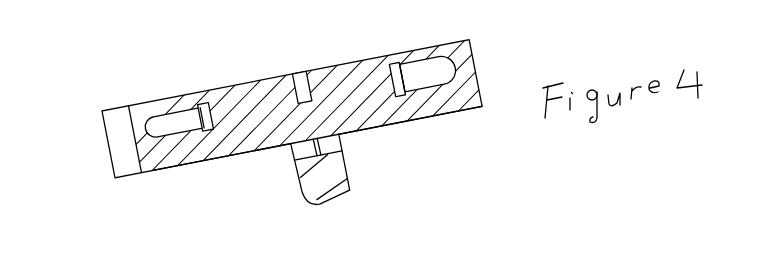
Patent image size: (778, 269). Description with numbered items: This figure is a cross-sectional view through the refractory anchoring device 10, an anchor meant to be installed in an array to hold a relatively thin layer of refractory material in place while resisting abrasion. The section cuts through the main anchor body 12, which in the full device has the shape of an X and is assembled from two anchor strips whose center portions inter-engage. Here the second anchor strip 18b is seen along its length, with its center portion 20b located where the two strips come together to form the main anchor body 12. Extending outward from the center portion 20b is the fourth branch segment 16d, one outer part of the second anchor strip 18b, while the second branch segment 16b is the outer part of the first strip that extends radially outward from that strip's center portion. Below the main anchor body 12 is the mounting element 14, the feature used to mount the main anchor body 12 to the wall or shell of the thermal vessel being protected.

The refractory anchoring device 10 is at (588, 40).
The main anchor body 12 is at (307, 130).
The mounting element 14 is at (289, 189).
The second branch segment 16b is at (221, 190).
The fourth branch segment 16d is at (411, 144).
The second anchor strip 18b is at (159, 80).
The center portion of the second strip 20b is at (375, 58).